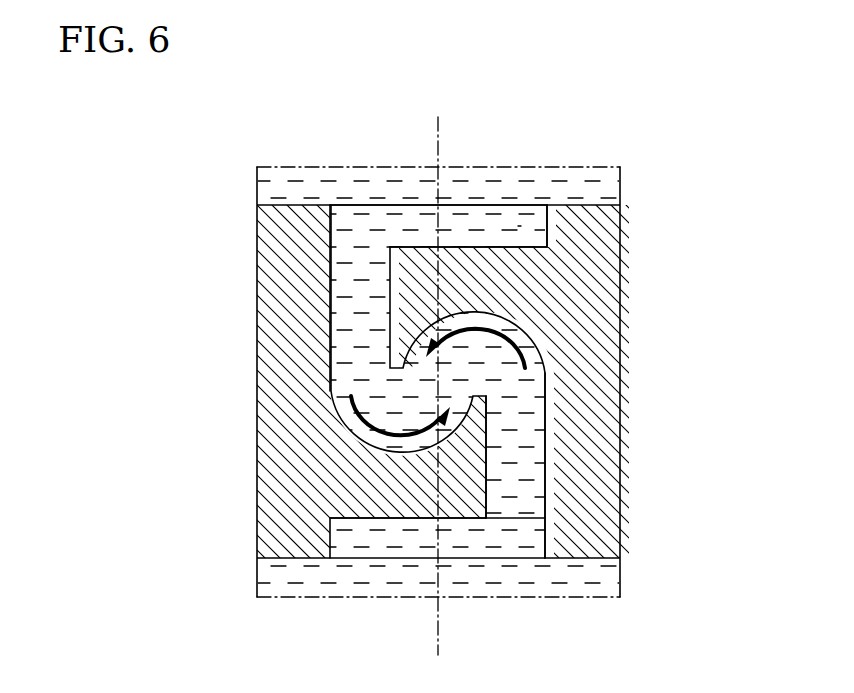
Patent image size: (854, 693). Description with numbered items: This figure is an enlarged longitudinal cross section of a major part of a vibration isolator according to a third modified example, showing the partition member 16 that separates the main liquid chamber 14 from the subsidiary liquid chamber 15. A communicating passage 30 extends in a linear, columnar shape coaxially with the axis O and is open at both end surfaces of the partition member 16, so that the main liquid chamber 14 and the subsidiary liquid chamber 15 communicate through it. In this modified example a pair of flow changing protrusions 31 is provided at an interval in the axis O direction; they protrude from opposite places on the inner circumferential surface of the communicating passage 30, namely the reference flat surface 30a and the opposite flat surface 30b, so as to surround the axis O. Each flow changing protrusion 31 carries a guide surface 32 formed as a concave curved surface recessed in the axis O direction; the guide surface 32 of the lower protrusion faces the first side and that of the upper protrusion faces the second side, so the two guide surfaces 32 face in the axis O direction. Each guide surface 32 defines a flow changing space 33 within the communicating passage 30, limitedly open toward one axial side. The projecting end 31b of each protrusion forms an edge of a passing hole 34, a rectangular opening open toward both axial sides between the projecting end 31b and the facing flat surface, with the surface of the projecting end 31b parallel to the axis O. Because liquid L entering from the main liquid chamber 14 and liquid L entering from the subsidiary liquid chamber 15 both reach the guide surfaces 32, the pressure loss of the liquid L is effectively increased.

The main liquid chamber 14 is at (257, 187).
The subsidiary liquid chamber 15 is at (258, 577).
The partition member 16 is at (257, 322).
The communicating passage 30 is at (382, 213).
The reference flat surface 30a is at (330, 276).
The opposite flat surface 30b is at (547, 408).
The flow changing protrusion 31 is at (495, 243).
The projecting end 31b is at (487, 455).
The guide surface 32 is at (488, 308).
The flow changing space 33 is at (427, 333).
The passing hole 34 is at (540, 462).
The axis O is at (440, 140).
The liquid L is at (518, 225).